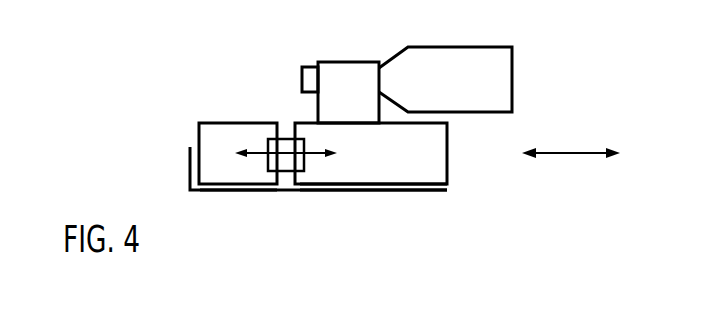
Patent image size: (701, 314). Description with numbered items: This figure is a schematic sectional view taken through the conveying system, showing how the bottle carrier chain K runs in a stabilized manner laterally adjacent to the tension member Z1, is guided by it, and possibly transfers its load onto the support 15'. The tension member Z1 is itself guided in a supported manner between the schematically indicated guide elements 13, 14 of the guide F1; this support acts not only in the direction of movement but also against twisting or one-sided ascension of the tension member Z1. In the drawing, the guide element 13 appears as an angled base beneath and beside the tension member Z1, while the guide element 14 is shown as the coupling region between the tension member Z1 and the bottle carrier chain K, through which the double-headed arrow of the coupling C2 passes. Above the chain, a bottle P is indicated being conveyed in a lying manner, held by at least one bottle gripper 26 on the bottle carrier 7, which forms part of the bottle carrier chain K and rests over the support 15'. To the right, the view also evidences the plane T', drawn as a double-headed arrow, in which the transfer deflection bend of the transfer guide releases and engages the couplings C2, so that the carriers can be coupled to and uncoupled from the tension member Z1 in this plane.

The tension member Z1 is at (215, 130).
The bottle carrier chain K is at (455, 140).
The bottle gripper 26 is at (337, 80).
The bottle P is at (417, 36).
The guide element 13 is at (190, 170).
The guide element 14 is at (291, 186).
The coupling C2 is at (277, 107).
The guide F1 is at (238, 201).
The bottle carrier 7 is at (401, 175).
The support 15' is at (374, 219).
The plane T' is at (571, 174).